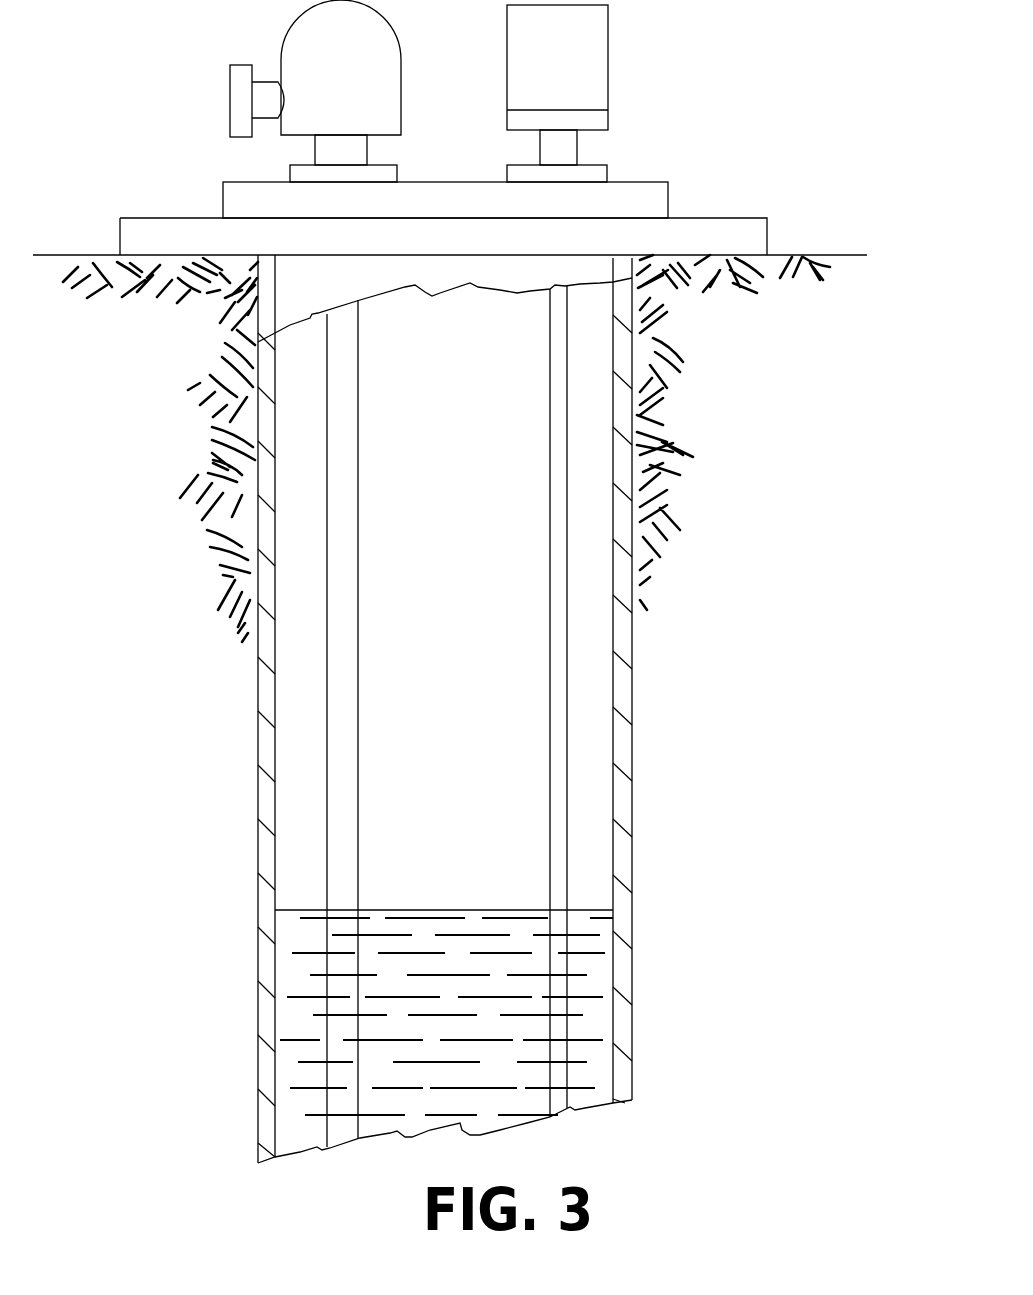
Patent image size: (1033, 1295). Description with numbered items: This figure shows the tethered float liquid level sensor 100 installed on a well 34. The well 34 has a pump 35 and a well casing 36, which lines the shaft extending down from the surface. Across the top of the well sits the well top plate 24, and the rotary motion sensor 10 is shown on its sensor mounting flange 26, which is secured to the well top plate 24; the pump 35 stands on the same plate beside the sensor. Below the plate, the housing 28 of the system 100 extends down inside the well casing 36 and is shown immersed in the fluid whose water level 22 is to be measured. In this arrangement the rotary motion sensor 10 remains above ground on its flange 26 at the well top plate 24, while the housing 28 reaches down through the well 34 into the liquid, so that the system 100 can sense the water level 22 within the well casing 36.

The tethered float liquid level sensor 100 is at (713, 81).
The rotary motion sensor 10 is at (580, 71).
The pump 35 is at (370, 80).
The sensor mounting flange 26 is at (598, 160).
The well top plate 24 is at (668, 200).
The well 34 is at (480, 414).
The housing 28 is at (550, 572).
The well casing 36 is at (257, 750).
The water level 22 is at (453, 910).